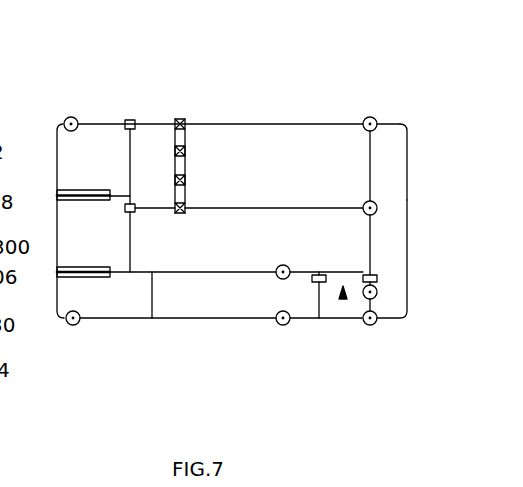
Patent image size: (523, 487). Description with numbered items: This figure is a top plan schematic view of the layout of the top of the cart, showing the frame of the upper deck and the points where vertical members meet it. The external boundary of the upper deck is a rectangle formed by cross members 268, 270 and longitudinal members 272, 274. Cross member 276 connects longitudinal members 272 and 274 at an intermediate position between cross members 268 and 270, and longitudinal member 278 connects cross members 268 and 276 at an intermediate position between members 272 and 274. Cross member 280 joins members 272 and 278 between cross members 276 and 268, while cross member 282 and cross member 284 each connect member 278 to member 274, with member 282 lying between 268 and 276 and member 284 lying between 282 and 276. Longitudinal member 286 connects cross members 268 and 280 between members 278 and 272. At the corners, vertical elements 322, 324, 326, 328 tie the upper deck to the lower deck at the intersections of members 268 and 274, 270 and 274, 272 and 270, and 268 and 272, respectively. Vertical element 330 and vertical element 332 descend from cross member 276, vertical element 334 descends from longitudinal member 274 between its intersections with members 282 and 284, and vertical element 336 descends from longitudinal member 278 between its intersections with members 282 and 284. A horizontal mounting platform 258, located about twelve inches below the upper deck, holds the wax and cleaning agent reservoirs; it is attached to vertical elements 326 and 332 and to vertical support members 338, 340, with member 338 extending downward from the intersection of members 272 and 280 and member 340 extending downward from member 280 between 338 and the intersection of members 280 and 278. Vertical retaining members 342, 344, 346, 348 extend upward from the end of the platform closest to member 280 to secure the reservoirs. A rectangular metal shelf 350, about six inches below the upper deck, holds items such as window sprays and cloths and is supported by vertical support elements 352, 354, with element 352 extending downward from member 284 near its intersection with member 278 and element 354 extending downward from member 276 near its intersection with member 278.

The horizontal mounting platform 258 is at (259, 119).
The cross member 268 is at (55, 157).
The cross member 270 is at (407, 252).
The longitudinal member 272 is at (221, 123).
The longitudinal member 274 is at (192, 323).
The cross member 276 is at (372, 148).
The longitudinal member 278 is at (173, 271).
The cross member 280 is at (127, 156).
The cross member 282 is at (148, 295).
The cross member 284 is at (318, 300).
The longitudinal member 286 is at (117, 190).
The vertical element 322 is at (71, 327).
The vertical element 324 is at (372, 323).
The vertical element 326 is at (364, 118).
The vertical element 328 is at (73, 116).
The vertical element 330 is at (377, 292).
The vertical element 332 is at (377, 206).
The vertical element 334 is at (282, 325).
The vertical element 336 is at (283, 264).
The vertical support member 338 is at (130, 119).
The vertical support member 340 is at (125, 214).
The vertical retaining member 342 is at (180, 118).
The vertical retaining member 344 is at (187, 181).
The vertical retaining member 346 is at (187, 152).
The vertical retaining member 348 is at (183, 214).
The rectangular metal shelf 350 is at (343, 298).
The vertical support element 352 is at (311, 278).
The vertical support element 354 is at (375, 278).